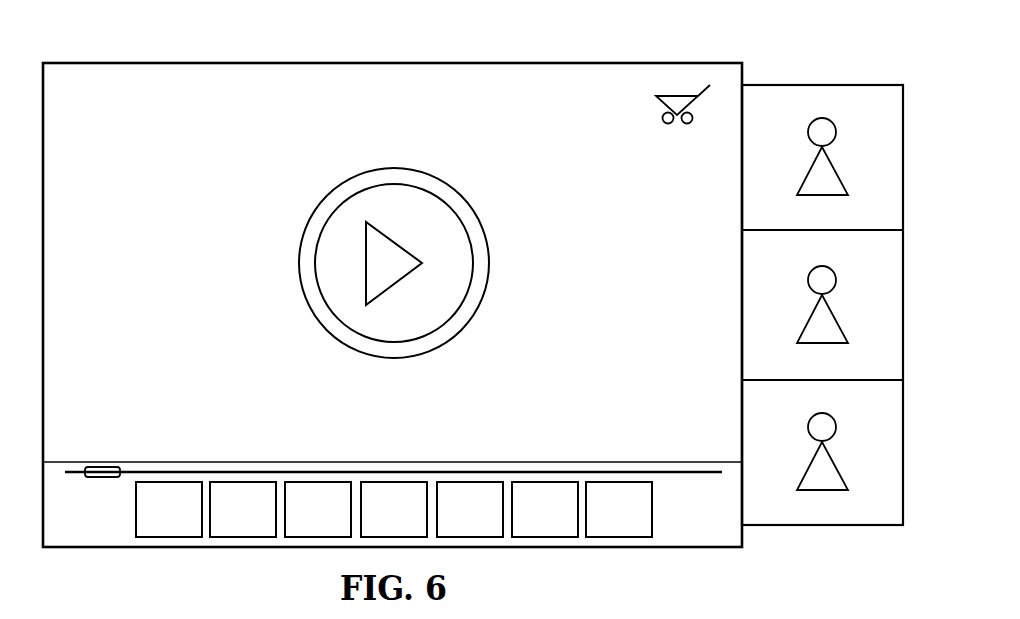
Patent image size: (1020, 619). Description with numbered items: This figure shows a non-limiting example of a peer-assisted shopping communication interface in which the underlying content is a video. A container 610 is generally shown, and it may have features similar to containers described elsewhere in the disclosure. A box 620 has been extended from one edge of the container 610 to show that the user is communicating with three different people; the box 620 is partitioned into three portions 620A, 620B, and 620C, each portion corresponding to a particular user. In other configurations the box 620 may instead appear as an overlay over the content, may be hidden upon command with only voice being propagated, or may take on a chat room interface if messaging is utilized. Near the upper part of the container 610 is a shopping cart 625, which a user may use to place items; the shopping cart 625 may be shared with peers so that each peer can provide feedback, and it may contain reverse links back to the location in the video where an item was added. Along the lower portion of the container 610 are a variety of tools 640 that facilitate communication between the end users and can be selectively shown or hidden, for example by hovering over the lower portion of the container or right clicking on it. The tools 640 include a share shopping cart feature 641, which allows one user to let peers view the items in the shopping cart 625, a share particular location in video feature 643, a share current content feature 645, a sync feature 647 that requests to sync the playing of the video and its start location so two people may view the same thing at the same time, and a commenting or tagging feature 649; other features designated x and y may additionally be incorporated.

The container 610 is at (392, 73).
The box 620 is at (858, 80).
The portion 620A is at (750, 170).
The portion 620B is at (750, 311).
The portion 620C is at (750, 420).
The shopping cart 625 is at (656, 108).
The tools 640 is at (121, 526).
The share shopping cart feature 641 is at (190, 522).
The share particular location in video feature 643 is at (264, 522).
The share current content feature 645 is at (339, 522).
The sync feature 647 is at (415, 522).
The commenting or tagging feature 649 is at (491, 522).